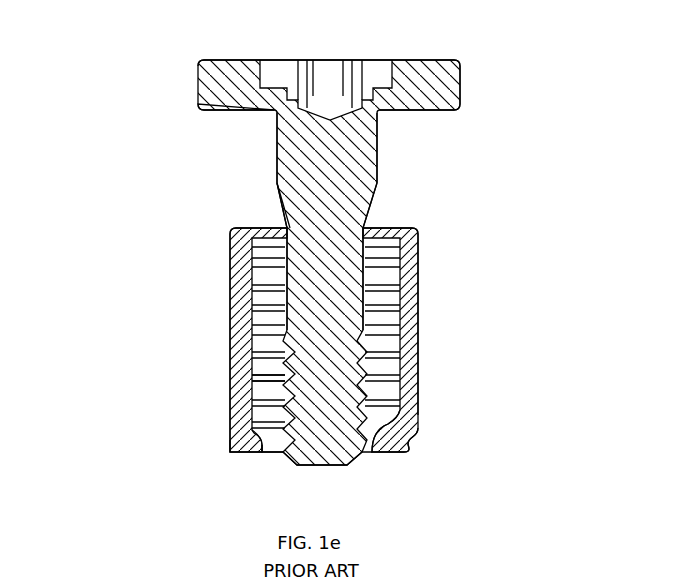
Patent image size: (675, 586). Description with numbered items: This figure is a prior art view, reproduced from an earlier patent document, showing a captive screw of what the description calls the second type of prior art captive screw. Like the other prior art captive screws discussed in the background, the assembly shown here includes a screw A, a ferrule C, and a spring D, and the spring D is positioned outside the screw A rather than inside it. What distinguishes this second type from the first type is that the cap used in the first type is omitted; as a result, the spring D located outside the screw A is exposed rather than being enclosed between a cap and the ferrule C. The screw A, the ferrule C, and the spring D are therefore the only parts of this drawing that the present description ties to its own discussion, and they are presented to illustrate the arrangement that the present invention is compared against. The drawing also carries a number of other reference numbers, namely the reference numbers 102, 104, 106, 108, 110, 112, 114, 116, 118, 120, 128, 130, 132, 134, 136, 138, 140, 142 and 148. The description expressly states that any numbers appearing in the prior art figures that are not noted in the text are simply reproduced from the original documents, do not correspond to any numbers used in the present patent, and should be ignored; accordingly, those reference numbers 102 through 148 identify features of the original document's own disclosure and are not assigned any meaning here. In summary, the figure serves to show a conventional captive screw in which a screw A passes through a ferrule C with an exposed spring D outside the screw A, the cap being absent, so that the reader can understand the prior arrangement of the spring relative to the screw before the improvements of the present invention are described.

The screw 102 is at (392, 151).
The screw head 108 is at (428, 72).
The drive recess in screw head 148 is at (323, 74).
The screw neck 110 is at (287, 180).
The shoulder of screw 128 is at (280, 223).
The undercut of screw 114 is at (380, 225).
The threaded shank of screw 112 is at (300, 342).
The screw tip 134 is at (350, 465).
The nut / retainer body 104 is at (420, 276).
The top of retainer 120 is at (226, 223).
The top corner of retainer 130 is at (404, 228).
The spring / internal thread 106 is at (262, 270).
The internal thread of retainer 132 is at (412, 330).
The inner bore of retainer 116 is at (262, 382).
The lower lip of retainer 136 is at (248, 445).
The bottom of retainer 118 is at (226, 446).
The bottom flange 142 is at (240, 455).
The lower hook of retainer 138 is at (415, 437).
The retaining lip 140 is at (405, 450).
The screw A is at (297, 153).
The spring D is at (258, 327).
The ferrule C is at (412, 368).